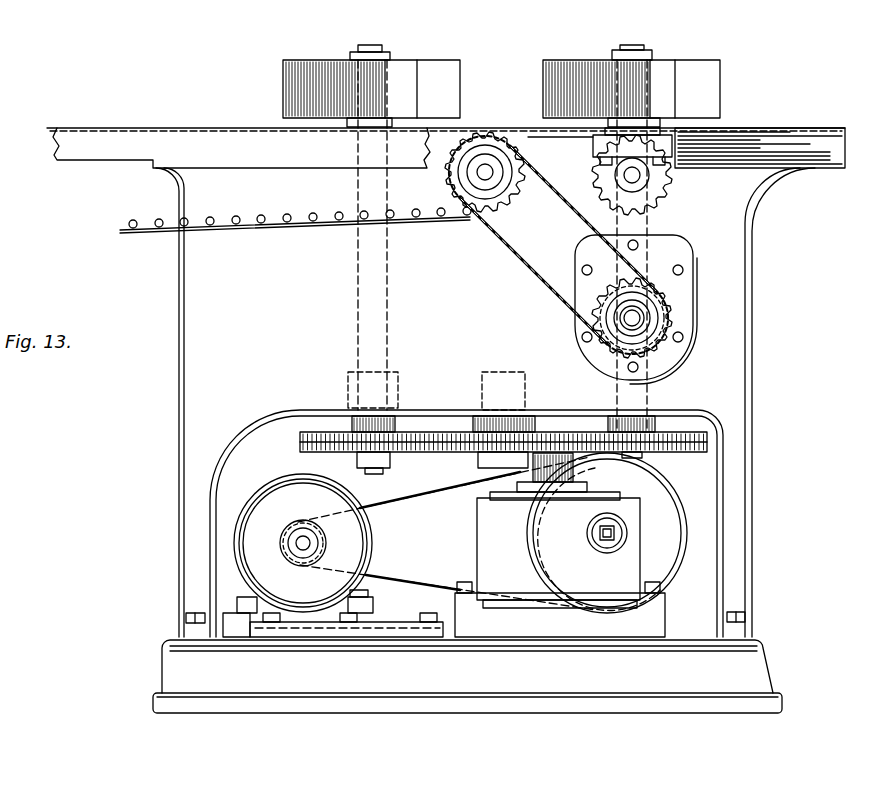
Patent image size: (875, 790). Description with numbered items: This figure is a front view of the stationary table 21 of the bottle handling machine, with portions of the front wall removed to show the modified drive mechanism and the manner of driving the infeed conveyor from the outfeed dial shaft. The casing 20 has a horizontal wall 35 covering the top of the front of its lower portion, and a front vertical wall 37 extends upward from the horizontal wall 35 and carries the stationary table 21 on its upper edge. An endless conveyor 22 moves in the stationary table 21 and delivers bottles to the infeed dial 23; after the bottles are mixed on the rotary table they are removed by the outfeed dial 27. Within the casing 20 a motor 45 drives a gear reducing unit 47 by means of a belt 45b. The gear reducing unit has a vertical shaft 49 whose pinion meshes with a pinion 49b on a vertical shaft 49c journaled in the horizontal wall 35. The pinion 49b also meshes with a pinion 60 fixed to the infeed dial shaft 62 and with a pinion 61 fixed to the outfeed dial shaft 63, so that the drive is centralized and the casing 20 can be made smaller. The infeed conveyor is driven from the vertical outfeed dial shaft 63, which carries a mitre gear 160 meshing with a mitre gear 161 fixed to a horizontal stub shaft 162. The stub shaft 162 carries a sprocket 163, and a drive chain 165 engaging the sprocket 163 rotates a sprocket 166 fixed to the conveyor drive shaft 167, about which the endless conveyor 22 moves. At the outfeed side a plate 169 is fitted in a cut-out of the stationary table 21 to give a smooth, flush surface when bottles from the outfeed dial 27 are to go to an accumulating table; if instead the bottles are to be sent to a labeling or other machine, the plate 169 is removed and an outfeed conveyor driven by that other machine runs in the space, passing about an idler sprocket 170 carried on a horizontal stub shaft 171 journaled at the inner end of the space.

The endless conveyor 22 is at (117, 127).
The infeed dial 23 is at (435, 68).
The outfeed dial 27 is at (695, 70).
The plate 169 is at (668, 125).
The stationary table 21 is at (778, 128).
The idler sprocket 170 is at (652, 183).
The horizontal stub shaft 171 is at (640, 180).
The conveyor drive shaft 167 is at (485, 172).
The sprocket 166 is at (473, 223).
The drive chain 165 is at (525, 263).
The mitre gear 161 is at (647, 290).
The mitre gear 160 is at (684, 280).
The horizontal stub shaft 162 is at (652, 313).
The sprocket 163 is at (633, 318).
The infeed dial shaft 62 is at (388, 300).
The front vertical wall 37 is at (233, 402).
The horizontal wall 35 is at (430, 408).
The vertical shaft 49c is at (525, 400).
The outfeed dial shaft 63 is at (633, 392).
The casing 20 is at (733, 345).
The pinion 61 is at (710, 437).
The pinion 60 is at (300, 445).
The pinion 49b is at (460, 457).
The motor 45 is at (333, 555).
The belt 45b is at (433, 500).
The vertical shaft 49 is at (550, 462).
The gear reducing unit 47 is at (571, 545).